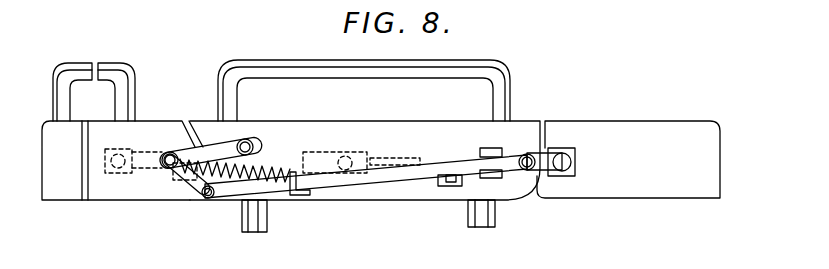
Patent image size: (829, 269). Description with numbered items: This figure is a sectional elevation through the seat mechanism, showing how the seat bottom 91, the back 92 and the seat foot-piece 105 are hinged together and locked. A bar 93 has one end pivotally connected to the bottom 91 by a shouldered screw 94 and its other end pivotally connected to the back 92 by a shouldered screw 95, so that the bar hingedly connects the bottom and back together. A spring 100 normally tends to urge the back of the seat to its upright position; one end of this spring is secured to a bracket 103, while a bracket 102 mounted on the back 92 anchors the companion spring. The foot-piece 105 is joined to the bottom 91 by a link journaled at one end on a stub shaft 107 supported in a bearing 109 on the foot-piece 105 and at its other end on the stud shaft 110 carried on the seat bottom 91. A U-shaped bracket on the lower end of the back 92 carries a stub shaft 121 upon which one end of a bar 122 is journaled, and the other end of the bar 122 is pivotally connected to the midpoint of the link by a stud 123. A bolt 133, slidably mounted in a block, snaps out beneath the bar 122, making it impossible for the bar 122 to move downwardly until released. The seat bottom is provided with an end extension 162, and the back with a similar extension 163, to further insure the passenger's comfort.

The seat bottom 91 is at (407, 130).
The seat back 92 is at (102, 190).
The bar 93 is at (217, 152).
The shouldered screw 94 is at (250, 143).
The shouldered screw 95 is at (165, 168).
The spring 100 is at (255, 178).
The bracket 102 is at (180, 178).
The bracket 103 is at (300, 197).
The seat foot-piece 105 is at (648, 123).
The pin 107 is at (563, 152).
The bearing 109 is at (573, 173).
The stud shaft 110 is at (488, 150).
The stub shaft 121 is at (210, 198).
The bar 122 is at (440, 163).
The stud 123 is at (525, 155).
The bolt 133 is at (448, 182).
The end extension 162 is at (462, 68).
The extension 163 is at (128, 75).